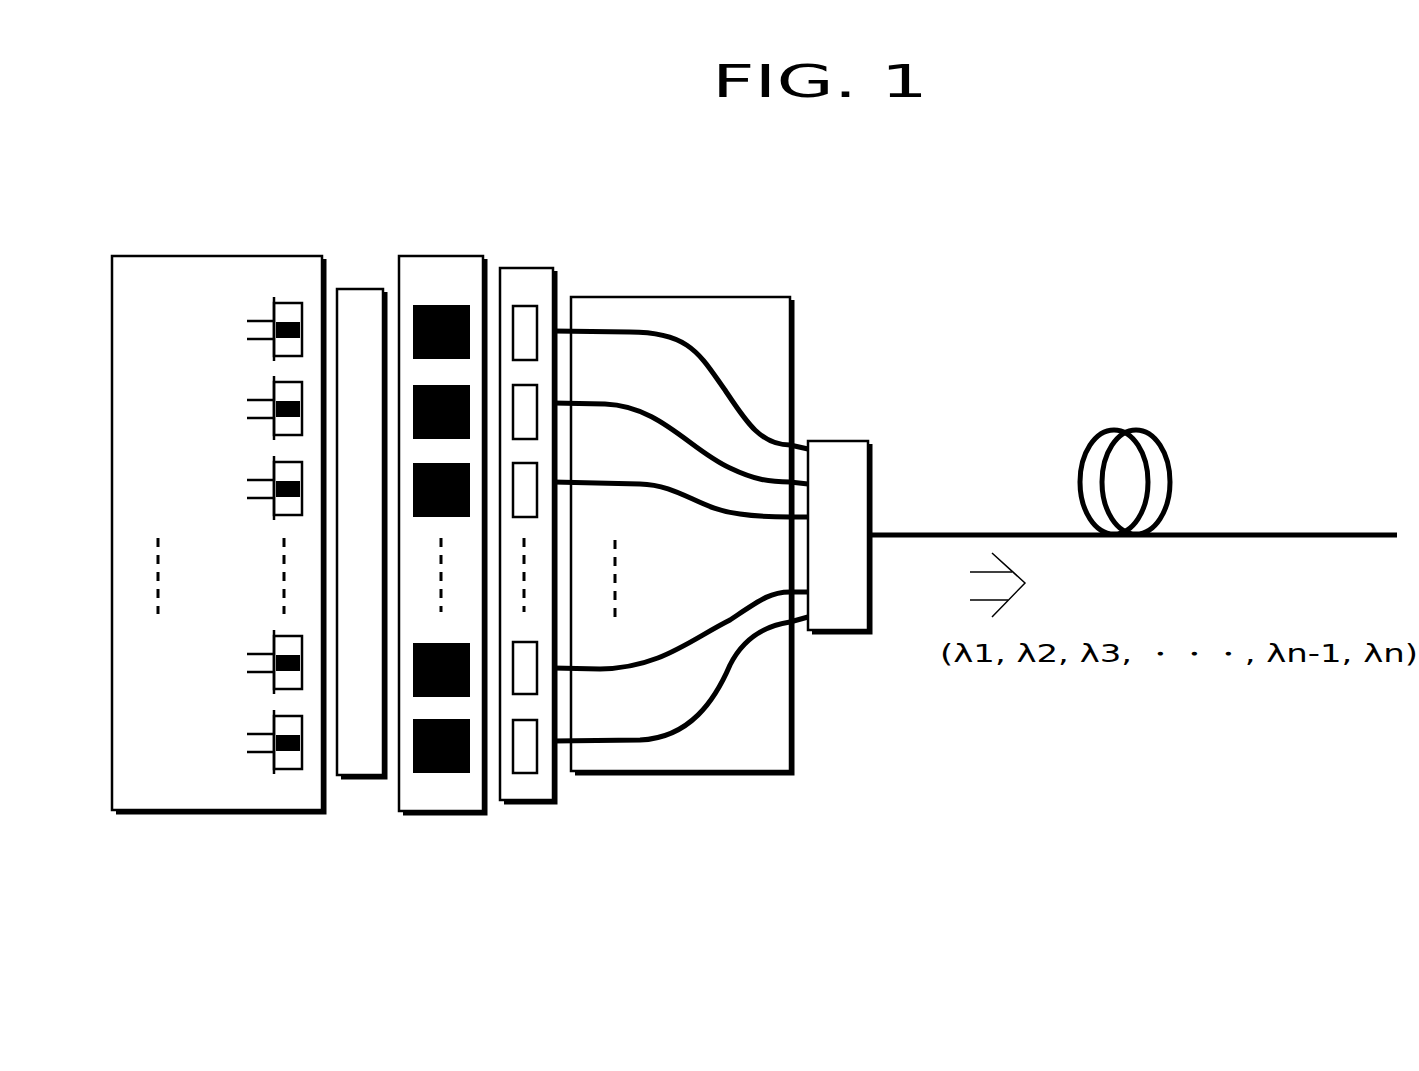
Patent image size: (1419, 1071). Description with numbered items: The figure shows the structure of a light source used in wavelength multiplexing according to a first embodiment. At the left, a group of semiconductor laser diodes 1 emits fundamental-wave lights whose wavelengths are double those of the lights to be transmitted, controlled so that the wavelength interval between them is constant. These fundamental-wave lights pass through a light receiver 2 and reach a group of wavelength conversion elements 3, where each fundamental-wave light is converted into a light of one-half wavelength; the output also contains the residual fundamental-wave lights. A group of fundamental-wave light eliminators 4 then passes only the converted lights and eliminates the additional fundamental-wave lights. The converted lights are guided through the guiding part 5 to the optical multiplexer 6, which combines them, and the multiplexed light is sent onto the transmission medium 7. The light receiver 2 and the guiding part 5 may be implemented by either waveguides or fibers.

The group of semiconductor laser diodes 1 is at (212, 256).
The light receiver 2 is at (348, 289).
The group of wavelength conversion elements 3 is at (440, 256).
The group of fundamental-wave light eliminators 4 is at (523, 267).
The guiding part 5 is at (678, 297).
The optical multiplexer 6 is at (842, 441).
The transmission medium 7 is at (1187, 533).